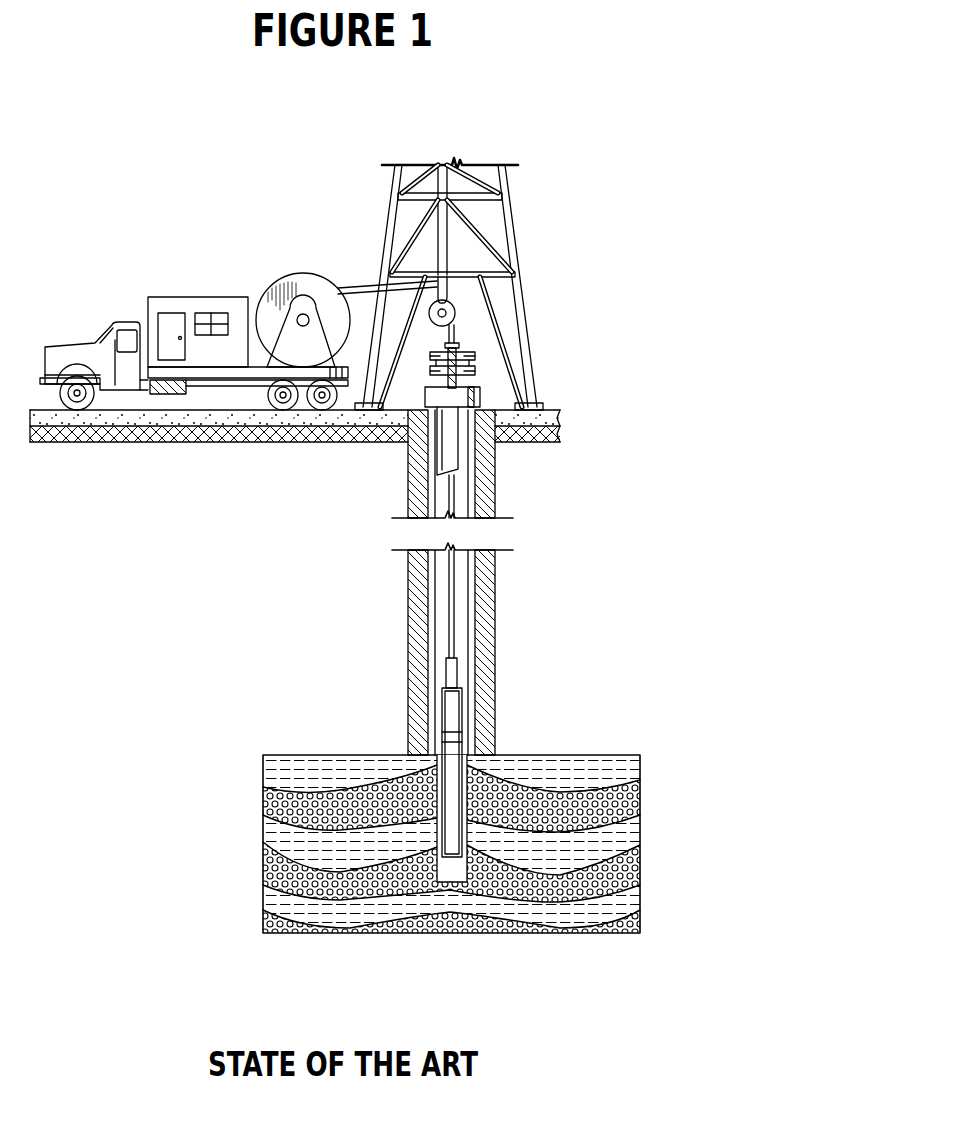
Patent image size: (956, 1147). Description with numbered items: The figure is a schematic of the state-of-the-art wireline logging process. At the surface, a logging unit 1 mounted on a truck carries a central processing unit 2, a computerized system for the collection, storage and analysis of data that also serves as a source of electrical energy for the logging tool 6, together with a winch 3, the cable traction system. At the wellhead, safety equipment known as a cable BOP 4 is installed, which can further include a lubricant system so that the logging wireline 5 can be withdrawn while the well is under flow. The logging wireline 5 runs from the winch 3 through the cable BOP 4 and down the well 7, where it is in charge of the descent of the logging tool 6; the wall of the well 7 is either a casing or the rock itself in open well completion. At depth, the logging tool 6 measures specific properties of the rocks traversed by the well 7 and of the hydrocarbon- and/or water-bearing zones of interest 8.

The logging unit 1 is at (110, 322).
The central processing unit 2 is at (190, 297).
The winch 3 is at (280, 282).
The cable BOP 4 is at (477, 355).
The logging wireline 5 is at (356, 288).
The logging tool 6 is at (450, 707).
The well 7 is at (478, 675).
The hydrocarbon- and/or water-bearing zones of interest 8 is at (562, 818).